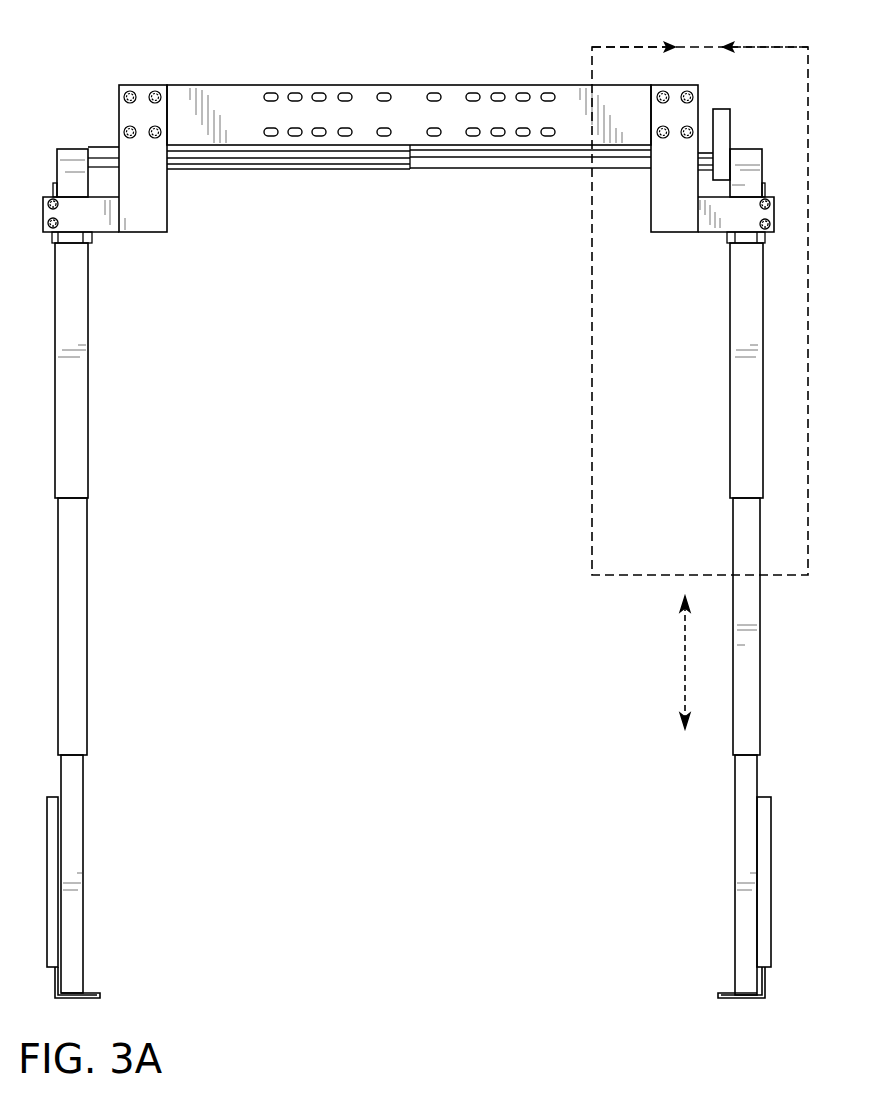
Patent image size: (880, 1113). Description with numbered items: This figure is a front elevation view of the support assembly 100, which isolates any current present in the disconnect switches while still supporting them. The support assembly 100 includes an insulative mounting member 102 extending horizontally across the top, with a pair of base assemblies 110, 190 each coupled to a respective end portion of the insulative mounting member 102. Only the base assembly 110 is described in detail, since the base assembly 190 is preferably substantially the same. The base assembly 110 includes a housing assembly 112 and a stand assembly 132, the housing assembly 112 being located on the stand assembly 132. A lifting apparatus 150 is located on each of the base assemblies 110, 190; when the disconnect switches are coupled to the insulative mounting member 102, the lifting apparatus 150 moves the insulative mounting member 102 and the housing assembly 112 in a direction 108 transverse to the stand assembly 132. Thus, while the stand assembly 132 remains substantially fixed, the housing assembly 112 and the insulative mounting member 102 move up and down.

The support assembly 100 is at (427, 828).
The insulative mounting member 102 is at (232, 80).
The lifting apparatus 150 is at (420, 60).
The base assembly 190 is at (165, 489).
The base assembly 110 is at (557, 502).
The housing assembly 112 is at (698, 265).
The stand assembly 132 is at (650, 768).
The direction 108 is at (683, 660).